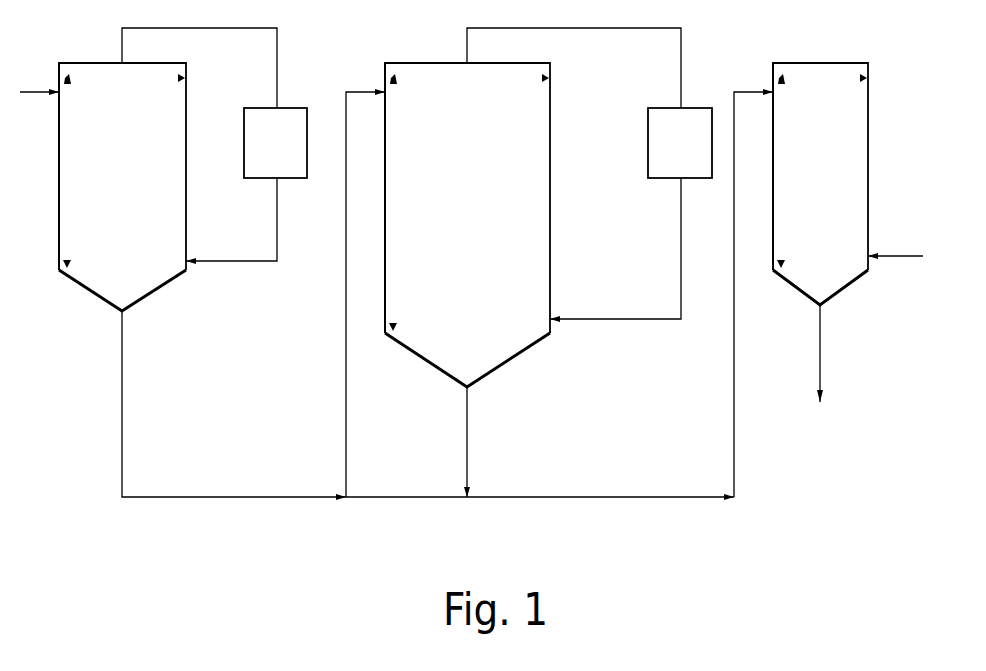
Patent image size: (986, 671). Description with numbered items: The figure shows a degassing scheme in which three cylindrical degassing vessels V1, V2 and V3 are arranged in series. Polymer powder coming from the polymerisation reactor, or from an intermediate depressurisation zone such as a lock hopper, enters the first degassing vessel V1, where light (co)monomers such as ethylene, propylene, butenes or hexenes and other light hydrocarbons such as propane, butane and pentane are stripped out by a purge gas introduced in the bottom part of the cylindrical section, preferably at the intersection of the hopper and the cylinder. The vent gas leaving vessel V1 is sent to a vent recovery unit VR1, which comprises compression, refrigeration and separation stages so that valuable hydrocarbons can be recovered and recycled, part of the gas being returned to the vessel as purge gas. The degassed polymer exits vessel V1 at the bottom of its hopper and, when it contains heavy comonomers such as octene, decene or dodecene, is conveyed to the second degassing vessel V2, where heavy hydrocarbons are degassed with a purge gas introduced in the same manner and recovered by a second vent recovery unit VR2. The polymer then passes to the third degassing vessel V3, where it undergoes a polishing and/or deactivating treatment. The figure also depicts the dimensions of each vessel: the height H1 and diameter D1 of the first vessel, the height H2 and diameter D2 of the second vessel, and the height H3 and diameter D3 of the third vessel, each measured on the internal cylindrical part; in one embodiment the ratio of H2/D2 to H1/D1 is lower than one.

The first degassing vessel V1 is at (122, 187).
The diameter of the first degassing vessel D1 is at (122, 80).
The height of the first degassing vessel H1 is at (76, 166).
The vent recovery unit VR1 is at (214, 146).
The second degassing vessel V2 is at (467, 225).
The diameter of the second degassing vessel D2 is at (467, 80).
The height of the second degassing vessel H2 is at (404, 198).
The vent recovery unit VR2 is at (589, 175).
The third degassing vessel V3 is at (820, 184).
The diameter of the third degassing vessel D3 is at (820, 80).
The height of the third degassing vessel H3 is at (791, 166).